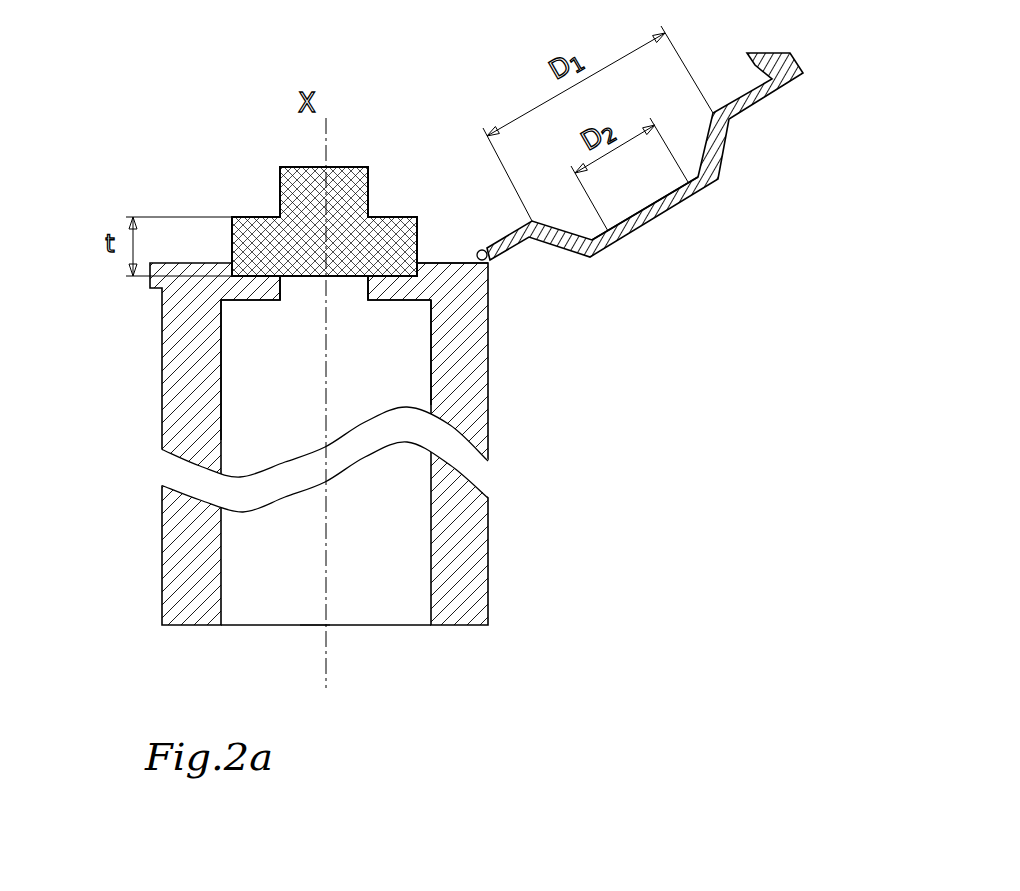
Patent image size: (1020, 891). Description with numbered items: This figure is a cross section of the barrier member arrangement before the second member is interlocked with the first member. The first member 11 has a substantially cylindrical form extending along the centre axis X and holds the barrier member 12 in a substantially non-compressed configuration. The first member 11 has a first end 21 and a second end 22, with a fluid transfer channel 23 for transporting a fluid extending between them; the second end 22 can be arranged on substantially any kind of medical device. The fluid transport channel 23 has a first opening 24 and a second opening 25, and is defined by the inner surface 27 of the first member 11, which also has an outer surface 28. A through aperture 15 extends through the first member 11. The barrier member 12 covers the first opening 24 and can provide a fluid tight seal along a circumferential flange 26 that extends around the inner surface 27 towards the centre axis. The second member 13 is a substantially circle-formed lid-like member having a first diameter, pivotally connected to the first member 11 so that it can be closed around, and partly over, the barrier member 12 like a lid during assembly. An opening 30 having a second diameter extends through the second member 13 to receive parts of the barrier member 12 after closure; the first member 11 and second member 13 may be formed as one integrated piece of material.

The first member 11 is at (370, 444).
The barrier member 12 is at (353, 193).
The second member 13 is at (745, 182).
The through aperture 15 is at (334, 284).
The first end 21 is at (447, 262).
The second end 22 is at (397, 625).
The fluid transfer channel 23 is at (340, 395).
The first opening 24 is at (360, 293).
The second opening 25 is at (297, 607).
The circumferential flange 26 is at (252, 288).
The inner surface 27 is at (177, 384).
The outer surface 28 is at (470, 385).
The opening 30 is at (642, 218).